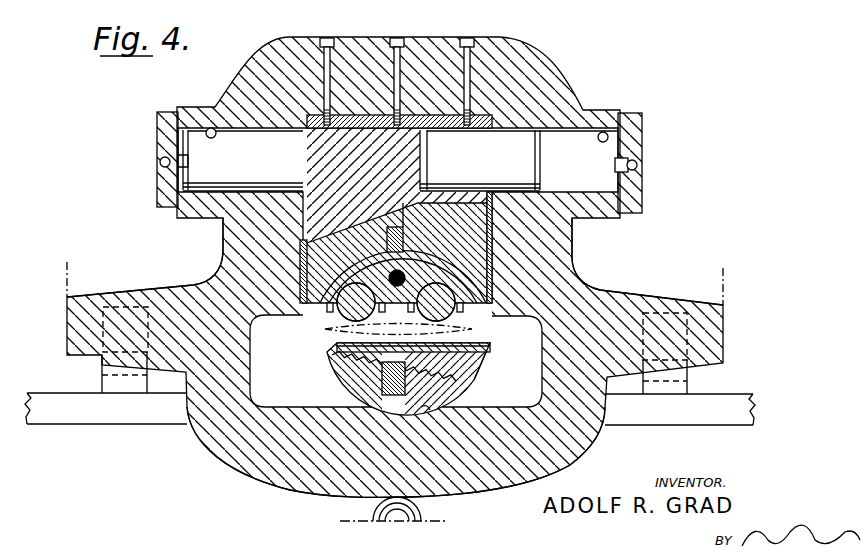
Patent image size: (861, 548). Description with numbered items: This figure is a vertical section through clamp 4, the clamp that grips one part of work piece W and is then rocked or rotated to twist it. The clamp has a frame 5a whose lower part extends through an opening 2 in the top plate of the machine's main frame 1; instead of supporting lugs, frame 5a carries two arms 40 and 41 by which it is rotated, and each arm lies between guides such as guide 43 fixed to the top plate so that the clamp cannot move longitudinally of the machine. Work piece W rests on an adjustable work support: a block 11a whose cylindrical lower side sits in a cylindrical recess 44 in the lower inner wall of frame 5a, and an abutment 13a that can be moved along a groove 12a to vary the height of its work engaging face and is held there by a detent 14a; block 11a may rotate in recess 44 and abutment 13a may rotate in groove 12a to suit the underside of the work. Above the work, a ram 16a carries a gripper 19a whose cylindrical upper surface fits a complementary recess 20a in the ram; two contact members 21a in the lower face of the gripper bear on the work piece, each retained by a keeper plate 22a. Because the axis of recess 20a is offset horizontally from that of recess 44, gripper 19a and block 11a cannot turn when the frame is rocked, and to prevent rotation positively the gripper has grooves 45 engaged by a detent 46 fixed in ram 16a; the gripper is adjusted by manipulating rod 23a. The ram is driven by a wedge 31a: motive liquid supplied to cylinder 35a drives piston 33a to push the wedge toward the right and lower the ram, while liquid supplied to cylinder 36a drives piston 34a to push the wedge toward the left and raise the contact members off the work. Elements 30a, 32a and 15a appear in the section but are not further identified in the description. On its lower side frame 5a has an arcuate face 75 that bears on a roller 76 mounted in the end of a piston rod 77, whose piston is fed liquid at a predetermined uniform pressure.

The clamp 4 is at (433, 27).
The cylinder 35a is at (212, 128).
The cylinder 36a is at (603, 133).
The piston 33a is at (205, 147).
The piston 34a is at (527, 148).
The wedge 31a is at (312, 149).
The right piston 32a is at (437, 128).
The central block 30a is at (396, 222).
The detent 46 is at (404, 231).
The rod 23a is at (383, 278).
The recess 20a is at (412, 256).
The grooves 45 is at (433, 263).
The ram 16a is at (494, 224).
The contact members 21a is at (396, 302).
The keeper plate 22a is at (328, 321).
The work piece W is at (328, 332).
The gripper 19a is at (488, 312).
The groove 12a is at (337, 348).
The adjustable block 11a is at (324, 360).
The wedge 15a is at (340, 376).
The abutment 13a is at (486, 362).
The detent 14a is at (359, 408).
The cylindrical recess 44 is at (430, 410).
The arm 40 is at (190, 292).
The arm 41 is at (637, 302).
The guide 43 is at (690, 385).
The frame 1 is at (58, 423).
The opening 2 is at (667, 413).
The frame 5a is at (250, 462).
The arcuate face 75 is at (352, 497).
The roller 76 is at (412, 500).
The piston rod 77 is at (377, 513).